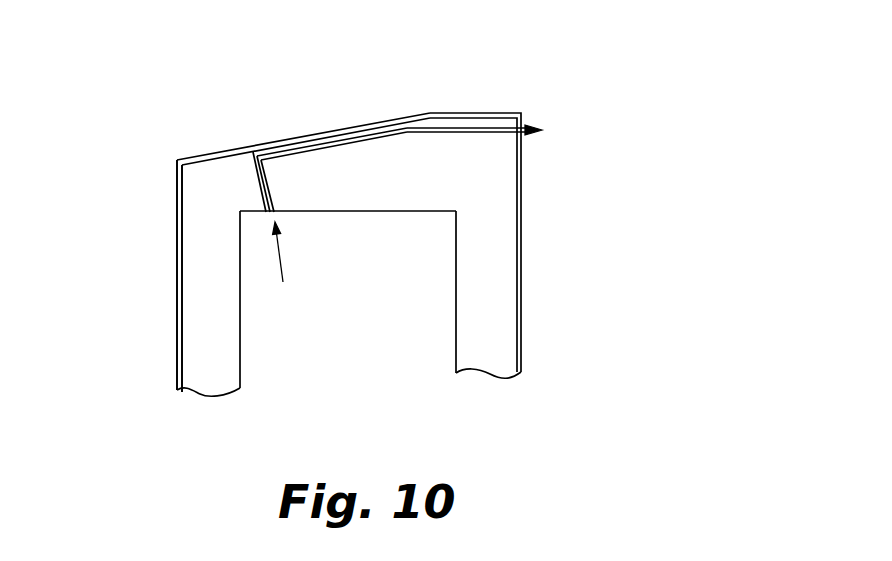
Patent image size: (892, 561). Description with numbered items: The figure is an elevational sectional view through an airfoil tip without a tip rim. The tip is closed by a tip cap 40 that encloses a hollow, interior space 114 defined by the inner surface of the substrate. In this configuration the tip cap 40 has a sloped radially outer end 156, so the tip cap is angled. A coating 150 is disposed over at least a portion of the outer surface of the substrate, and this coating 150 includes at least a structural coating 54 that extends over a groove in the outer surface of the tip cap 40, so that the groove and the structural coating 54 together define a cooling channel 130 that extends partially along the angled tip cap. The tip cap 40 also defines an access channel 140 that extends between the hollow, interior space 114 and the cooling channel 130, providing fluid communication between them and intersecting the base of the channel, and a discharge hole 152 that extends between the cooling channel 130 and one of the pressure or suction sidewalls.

The sloped radially outer end 156 is at (283, 126).
The tip cap 40 is at (309, 191).
The channel 130 is at (373, 137).
The discharge hole 152 is at (476, 128).
The access channel 140 is at (268, 185).
The coating 150 is at (177, 305).
The structural coating 54 is at (179, 276).
The hollow, interior space 114 is at (262, 340).